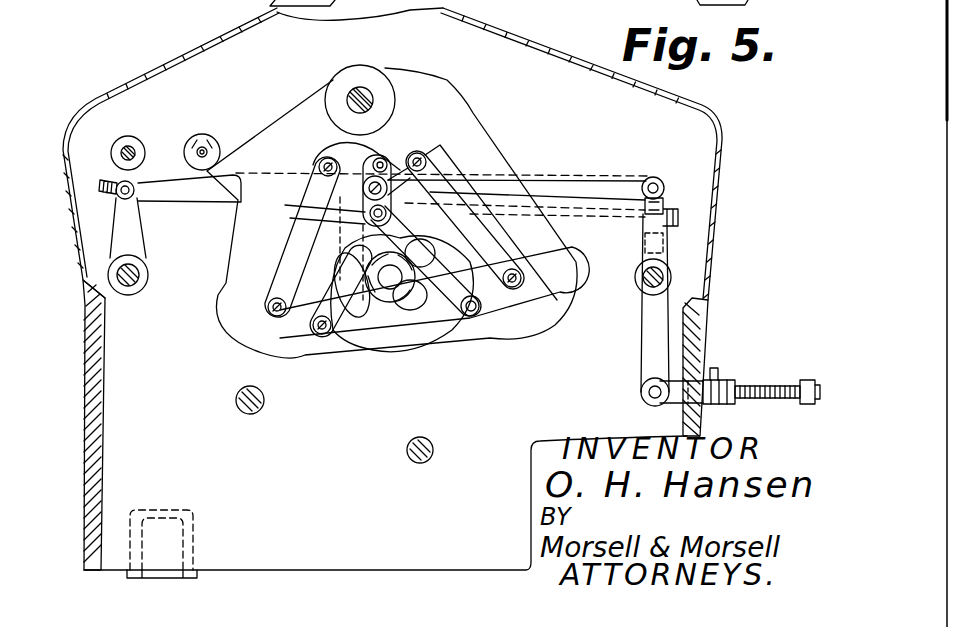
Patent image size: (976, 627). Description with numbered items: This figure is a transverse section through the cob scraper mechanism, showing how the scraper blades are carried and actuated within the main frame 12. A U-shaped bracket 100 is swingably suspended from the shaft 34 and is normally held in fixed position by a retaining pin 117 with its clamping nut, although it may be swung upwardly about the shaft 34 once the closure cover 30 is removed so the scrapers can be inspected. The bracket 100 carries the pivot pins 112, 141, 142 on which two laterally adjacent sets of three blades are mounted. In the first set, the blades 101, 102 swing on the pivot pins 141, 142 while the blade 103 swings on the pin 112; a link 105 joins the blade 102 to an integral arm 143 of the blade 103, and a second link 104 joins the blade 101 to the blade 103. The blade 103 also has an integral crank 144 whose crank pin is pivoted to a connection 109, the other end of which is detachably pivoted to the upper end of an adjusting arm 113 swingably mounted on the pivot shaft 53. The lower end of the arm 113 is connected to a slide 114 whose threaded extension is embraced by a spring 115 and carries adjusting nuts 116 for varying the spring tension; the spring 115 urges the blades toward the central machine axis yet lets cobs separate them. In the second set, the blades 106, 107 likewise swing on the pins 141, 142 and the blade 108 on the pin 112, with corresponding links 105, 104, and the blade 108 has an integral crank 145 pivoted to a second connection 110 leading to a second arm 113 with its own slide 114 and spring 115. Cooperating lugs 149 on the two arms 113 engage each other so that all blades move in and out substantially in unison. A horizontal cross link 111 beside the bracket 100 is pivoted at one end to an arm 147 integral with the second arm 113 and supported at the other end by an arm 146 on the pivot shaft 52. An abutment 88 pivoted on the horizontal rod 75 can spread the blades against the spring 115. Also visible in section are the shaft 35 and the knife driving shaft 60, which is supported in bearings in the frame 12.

The main frame 12 is at (98, 407).
The closure cover 30 is at (172, 62).
The shaft 34 is at (355, 90).
The shaft 35 is at (410, 458).
The pivot shaft 52 is at (130, 287).
The pivot shaft 53 is at (645, 278).
The knife driving shaft 60 is at (255, 413).
The horizontal rod 75 is at (133, 148).
The abutment 88 is at (110, 178).
The U-shaped bracket 100 is at (478, 113).
The scraper blade 101 is at (445, 335).
The scraper blade 102 is at (277, 335).
The scraper blade 103 is at (487, 229).
The link 104 is at (503, 253).
The link 105 is at (296, 232).
The scraper blade 106 is at (511, 290).
The scraper blade 107 is at (340, 338).
The scraper blade 108 is at (295, 217).
The connection 109 is at (573, 220).
The second connection 110 is at (545, 183).
The horizontal cross link 111 is at (168, 196).
The pivot pin 112 is at (370, 153).
The adjusting arm 113 is at (653, 353).
The slide 114 is at (667, 407).
The spring 115 is at (747, 387).
The adjusting nuts 116 is at (810, 407).
The retaining pin 117 is at (245, 132).
The pivot pin 141 is at (468, 318).
The pivot pin 142 is at (327, 336).
The integral arm 143 is at (340, 150).
The integral crank 144 is at (425, 160).
The integral crank 145 is at (390, 152).
The arm 146 is at (127, 241).
The arm 147 is at (664, 192).
The cooperating lugs 149 is at (643, 243).